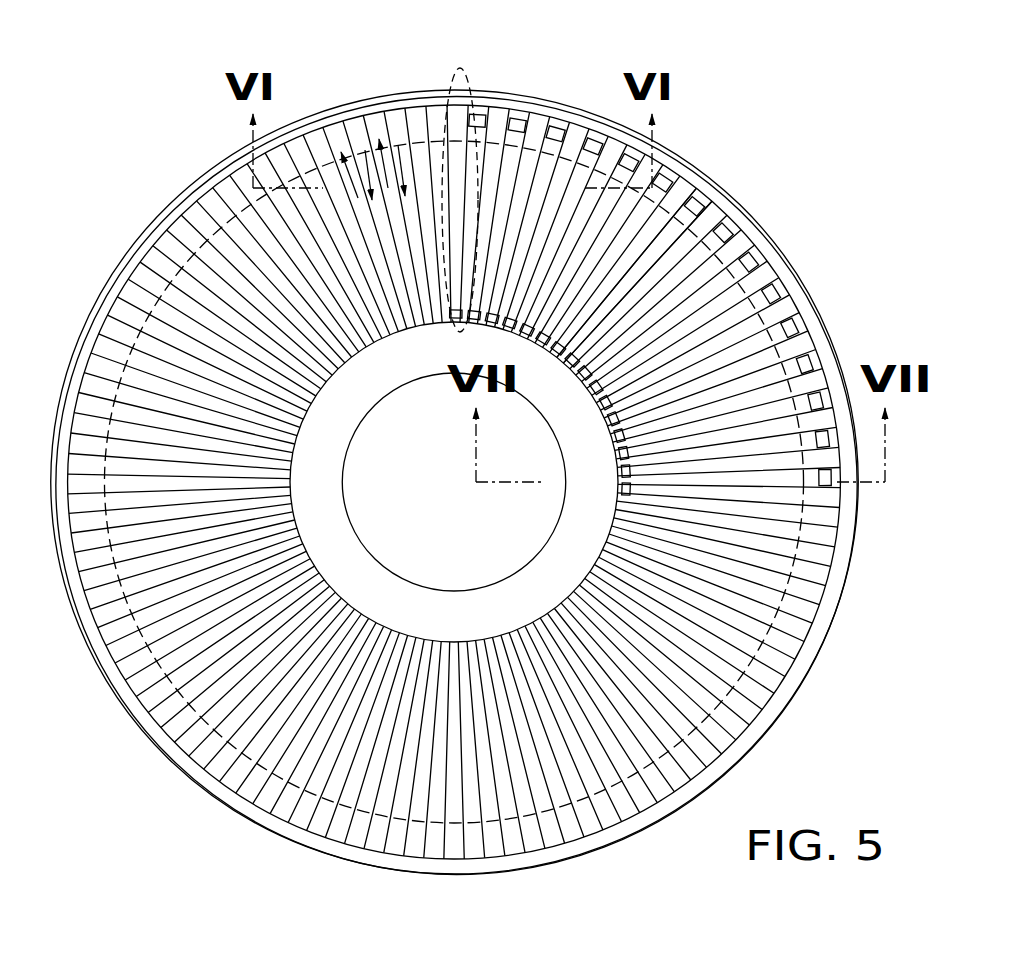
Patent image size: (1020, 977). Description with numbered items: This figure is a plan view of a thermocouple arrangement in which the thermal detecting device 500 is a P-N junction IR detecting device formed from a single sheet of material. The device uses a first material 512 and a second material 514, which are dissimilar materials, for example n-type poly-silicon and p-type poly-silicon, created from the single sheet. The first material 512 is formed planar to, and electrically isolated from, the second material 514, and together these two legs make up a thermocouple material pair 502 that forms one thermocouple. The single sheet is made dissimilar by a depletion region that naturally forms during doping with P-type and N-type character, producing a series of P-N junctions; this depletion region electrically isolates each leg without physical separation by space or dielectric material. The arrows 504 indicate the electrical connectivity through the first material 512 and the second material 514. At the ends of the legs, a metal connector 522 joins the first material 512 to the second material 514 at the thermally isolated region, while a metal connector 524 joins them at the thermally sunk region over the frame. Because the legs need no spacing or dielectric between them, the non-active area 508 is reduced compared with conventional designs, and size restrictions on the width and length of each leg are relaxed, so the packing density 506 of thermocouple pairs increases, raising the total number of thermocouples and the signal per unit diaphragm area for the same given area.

The thermal detecting device 500 is at (792, 94).
The thermocouple material pair 502 is at (470, 72).
The arrows 504 is at (173, 172).
The packing density 506 is at (702, 693).
The non-active area 508 is at (371, 584).
The first material 512 is at (685, 190).
The second material 514 is at (690, 204).
The metal connector 522 is at (574, 356).
The metal connector 524 is at (727, 230).